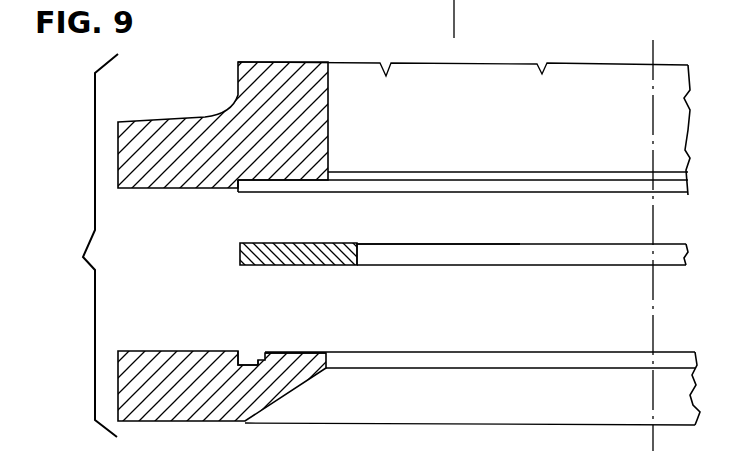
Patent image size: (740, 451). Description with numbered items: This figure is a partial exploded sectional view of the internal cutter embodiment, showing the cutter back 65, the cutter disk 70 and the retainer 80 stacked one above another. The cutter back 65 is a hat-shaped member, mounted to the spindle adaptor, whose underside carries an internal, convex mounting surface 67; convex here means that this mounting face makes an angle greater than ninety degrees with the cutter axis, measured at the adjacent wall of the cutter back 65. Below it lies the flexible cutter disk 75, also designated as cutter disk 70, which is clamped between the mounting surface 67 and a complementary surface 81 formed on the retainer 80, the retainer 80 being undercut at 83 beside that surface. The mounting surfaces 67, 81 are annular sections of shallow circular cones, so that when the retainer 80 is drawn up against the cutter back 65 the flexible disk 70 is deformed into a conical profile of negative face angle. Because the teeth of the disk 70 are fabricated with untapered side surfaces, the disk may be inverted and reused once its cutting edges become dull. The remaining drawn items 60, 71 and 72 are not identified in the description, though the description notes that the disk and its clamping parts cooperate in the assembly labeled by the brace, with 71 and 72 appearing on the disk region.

The joint assembly 60 is at (73, 245).
The cutter back 65 is at (256, 86).
The mounting surface 67 is at (302, 192).
The cutter disk 70 is at (436, 258).
The plate extension 71 is at (341, 243).
The hatched plate portion 72 is at (331, 266).
The flexible cutter disk 75 is at (360, 252).
The retainer 80 is at (118, 362).
The complementary surface 81 is at (295, 352).
The undercut 83 is at (257, 352).